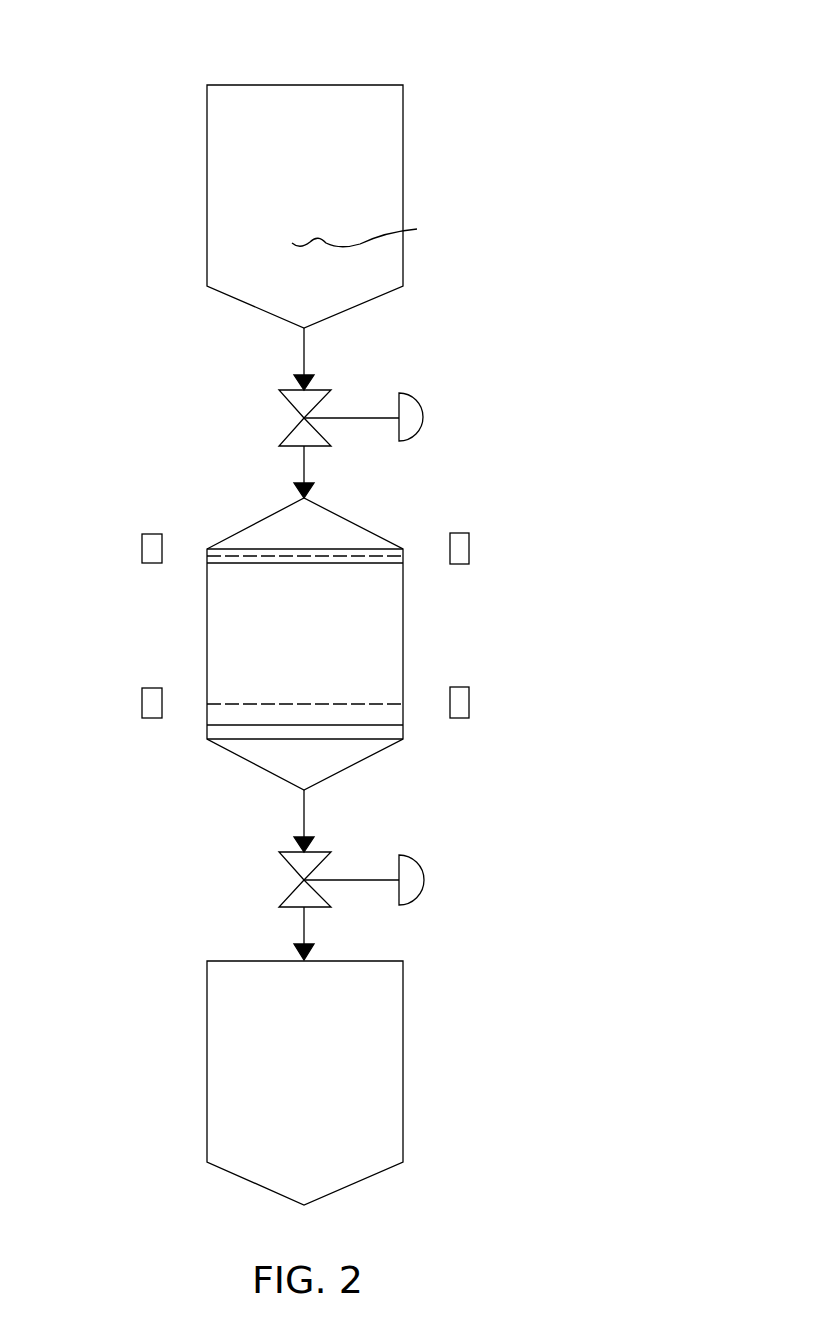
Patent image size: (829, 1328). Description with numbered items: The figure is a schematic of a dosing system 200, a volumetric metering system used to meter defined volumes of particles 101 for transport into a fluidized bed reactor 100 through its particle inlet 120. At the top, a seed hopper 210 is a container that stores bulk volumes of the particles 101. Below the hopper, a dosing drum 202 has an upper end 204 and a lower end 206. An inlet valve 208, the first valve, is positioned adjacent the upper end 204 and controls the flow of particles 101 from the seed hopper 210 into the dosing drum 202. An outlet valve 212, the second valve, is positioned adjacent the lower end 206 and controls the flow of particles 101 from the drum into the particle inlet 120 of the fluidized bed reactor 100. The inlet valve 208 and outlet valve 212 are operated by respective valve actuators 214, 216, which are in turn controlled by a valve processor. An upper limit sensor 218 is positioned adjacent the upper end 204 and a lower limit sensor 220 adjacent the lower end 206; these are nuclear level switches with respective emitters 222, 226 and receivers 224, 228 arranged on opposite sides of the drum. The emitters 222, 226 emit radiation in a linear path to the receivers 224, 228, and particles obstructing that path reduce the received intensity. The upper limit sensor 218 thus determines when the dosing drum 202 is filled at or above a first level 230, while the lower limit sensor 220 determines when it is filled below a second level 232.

The dosing system 200 is at (487, 40).
The seed hopper 210 is at (403, 143).
The particles 101 is at (375, 232).
The inlet valve 208 is at (330, 396).
The valve actuator 214 is at (422, 405).
The dosing drum 202 is at (403, 609).
The upper end 204 is at (343, 563).
The lower end 206 is at (357, 727).
The first level 230 is at (235, 557).
The second level 232 is at (235, 705).
The emitter 222 is at (142, 548).
The receiver 224 is at (469, 548).
The emitter 226 is at (142, 702).
The receiver 228 is at (469, 701).
The upper limit sensor 218 is at (470, 513).
The lower limit sensor 220 is at (473, 675).
The outlet valve 212 is at (330, 858).
The valve actuator 216 is at (422, 871).
The particle inlet 120 is at (315, 950).
The fluidized bed reactor 100 is at (403, 1028).